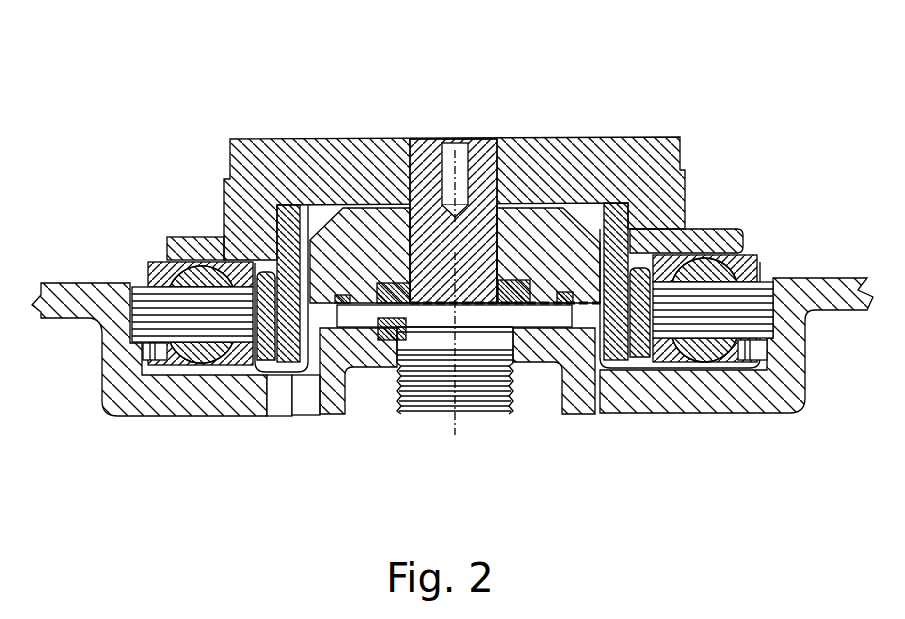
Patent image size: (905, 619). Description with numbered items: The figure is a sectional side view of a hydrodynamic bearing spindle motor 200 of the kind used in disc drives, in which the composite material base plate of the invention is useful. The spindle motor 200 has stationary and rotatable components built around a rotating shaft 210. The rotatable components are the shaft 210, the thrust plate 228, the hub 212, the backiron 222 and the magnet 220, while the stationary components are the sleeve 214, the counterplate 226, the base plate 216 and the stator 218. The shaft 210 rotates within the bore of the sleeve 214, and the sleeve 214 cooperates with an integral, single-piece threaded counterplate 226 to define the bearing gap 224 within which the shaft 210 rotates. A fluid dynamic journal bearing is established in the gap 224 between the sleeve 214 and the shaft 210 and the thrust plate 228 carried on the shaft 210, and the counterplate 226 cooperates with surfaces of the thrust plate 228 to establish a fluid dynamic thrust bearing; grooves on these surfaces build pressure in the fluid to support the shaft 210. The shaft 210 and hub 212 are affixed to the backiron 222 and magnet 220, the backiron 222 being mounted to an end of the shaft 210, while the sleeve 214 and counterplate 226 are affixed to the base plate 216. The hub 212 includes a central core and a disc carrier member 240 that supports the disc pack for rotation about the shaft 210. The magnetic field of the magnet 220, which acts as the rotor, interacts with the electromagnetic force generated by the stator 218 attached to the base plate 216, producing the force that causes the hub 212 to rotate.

The hydrodynamic bearing spindle motor 200 is at (320, 96).
The rotating shaft 210 is at (455, 292).
The hub 212 is at (520, 137).
The sleeve 214 is at (560, 248).
The base plate 216 is at (747, 397).
The stator 218 is at (745, 305).
The magnet 220 is at (640, 352).
The backiron 222 is at (685, 215).
The bearing gap 224 is at (500, 238).
The counterplate 226 is at (542, 315).
The thrust plate 228 is at (515, 303).
The disc carrier member 240 is at (617, 253).